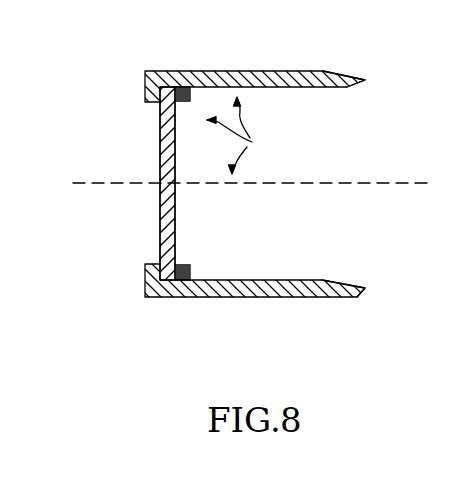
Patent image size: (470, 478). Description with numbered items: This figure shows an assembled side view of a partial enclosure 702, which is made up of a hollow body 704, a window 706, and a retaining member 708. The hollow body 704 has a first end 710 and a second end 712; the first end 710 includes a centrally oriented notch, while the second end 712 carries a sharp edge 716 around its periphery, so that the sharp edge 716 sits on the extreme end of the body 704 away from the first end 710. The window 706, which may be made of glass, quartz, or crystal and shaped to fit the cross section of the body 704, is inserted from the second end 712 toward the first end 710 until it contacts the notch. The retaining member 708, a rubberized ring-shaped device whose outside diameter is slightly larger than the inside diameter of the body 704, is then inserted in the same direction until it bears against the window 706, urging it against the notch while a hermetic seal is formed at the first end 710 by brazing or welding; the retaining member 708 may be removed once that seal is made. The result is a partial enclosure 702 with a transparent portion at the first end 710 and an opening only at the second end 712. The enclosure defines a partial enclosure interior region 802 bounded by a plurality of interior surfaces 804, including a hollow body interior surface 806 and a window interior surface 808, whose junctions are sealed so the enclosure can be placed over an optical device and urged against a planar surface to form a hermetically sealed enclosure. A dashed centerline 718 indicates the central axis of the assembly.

The partial enclosure 702 is at (229, 195).
The hollow body 704 is at (296, 280).
The window 706 is at (177, 207).
The retaining member 708 is at (186, 265).
The first end 710 is at (150, 148).
The second end 712 is at (363, 259).
The sharp edge 716 is at (365, 80).
The centerline 718 is at (367, 183).
The partial enclosure interior region 802 is at (345, 207).
The interior surfaces 804 is at (247, 135).
The hollow body interior surface 806 is at (302, 88).
The window interior surface 808 is at (175, 143).